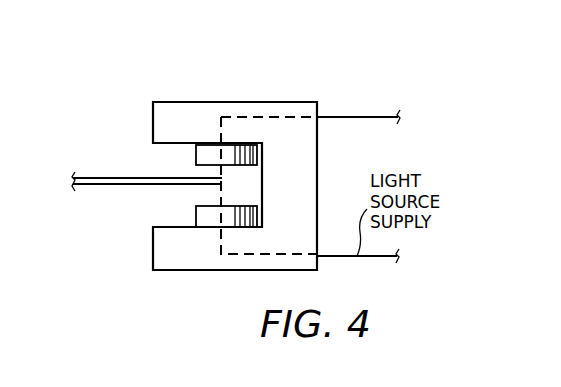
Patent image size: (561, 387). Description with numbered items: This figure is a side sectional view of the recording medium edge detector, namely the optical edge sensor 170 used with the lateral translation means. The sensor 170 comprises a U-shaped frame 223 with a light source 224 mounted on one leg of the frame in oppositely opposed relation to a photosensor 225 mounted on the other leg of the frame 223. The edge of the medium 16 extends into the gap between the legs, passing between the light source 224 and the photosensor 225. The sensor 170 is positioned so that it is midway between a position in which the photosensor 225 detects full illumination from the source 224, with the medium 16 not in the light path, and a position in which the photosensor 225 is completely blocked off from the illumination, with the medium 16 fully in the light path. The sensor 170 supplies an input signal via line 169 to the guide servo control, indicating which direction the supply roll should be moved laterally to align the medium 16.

The medium 16 is at (95, 177).
The line 169 is at (370, 116).
The optical edge sensor 170 is at (273, 87).
The U-shaped frame 223 is at (175, 112).
The light source 224 is at (197, 208).
The photosensor 225 is at (197, 153).